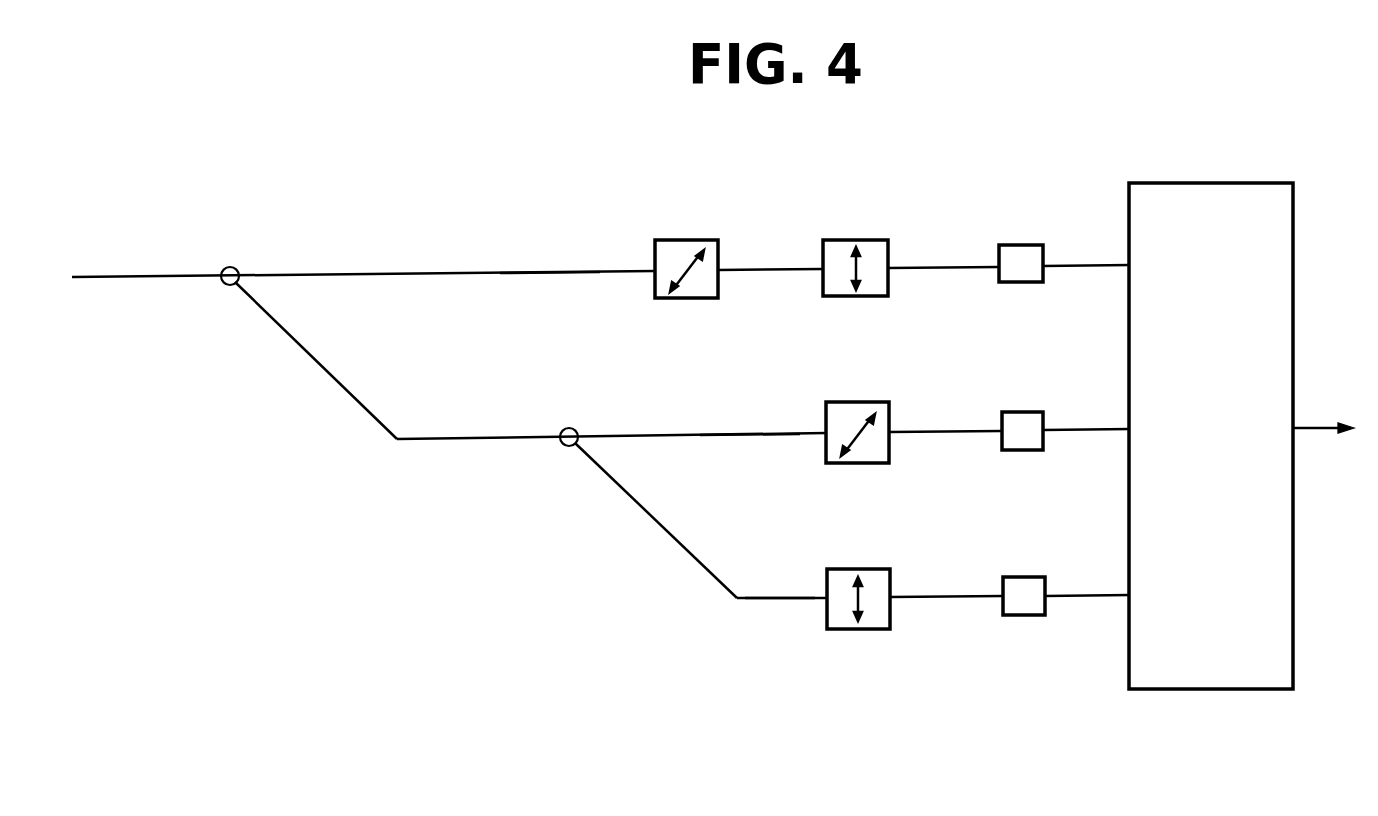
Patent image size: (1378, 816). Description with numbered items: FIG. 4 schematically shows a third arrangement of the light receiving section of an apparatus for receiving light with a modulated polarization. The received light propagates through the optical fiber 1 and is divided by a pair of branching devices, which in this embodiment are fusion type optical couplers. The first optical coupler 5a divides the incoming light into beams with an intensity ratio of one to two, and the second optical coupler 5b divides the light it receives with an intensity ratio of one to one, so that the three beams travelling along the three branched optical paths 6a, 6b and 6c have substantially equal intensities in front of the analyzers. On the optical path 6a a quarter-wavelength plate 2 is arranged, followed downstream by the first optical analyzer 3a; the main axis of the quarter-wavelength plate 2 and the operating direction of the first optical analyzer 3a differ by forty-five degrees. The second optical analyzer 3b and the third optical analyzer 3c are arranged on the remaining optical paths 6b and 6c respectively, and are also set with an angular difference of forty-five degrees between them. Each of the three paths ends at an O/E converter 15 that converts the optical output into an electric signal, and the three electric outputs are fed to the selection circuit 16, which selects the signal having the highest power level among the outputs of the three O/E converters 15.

The optical fiber 1 is at (112, 282).
The first optical coupler 5a is at (226, 286).
The second optical coupler 5b is at (567, 447).
The branched optical path 6a is at (538, 280).
The branched optical path 6b is at (745, 442).
The branched optical path 6c is at (770, 604).
The quarter-wavelength plate 2 is at (692, 300).
The first optical analyzer 3a is at (865, 298).
The second optical analyzer 3b is at (866, 465).
The third optical analyzer 3c is at (866, 631).
The O/E converter 15 is at (1021, 284).
The selection circuit 16 is at (1203, 691).